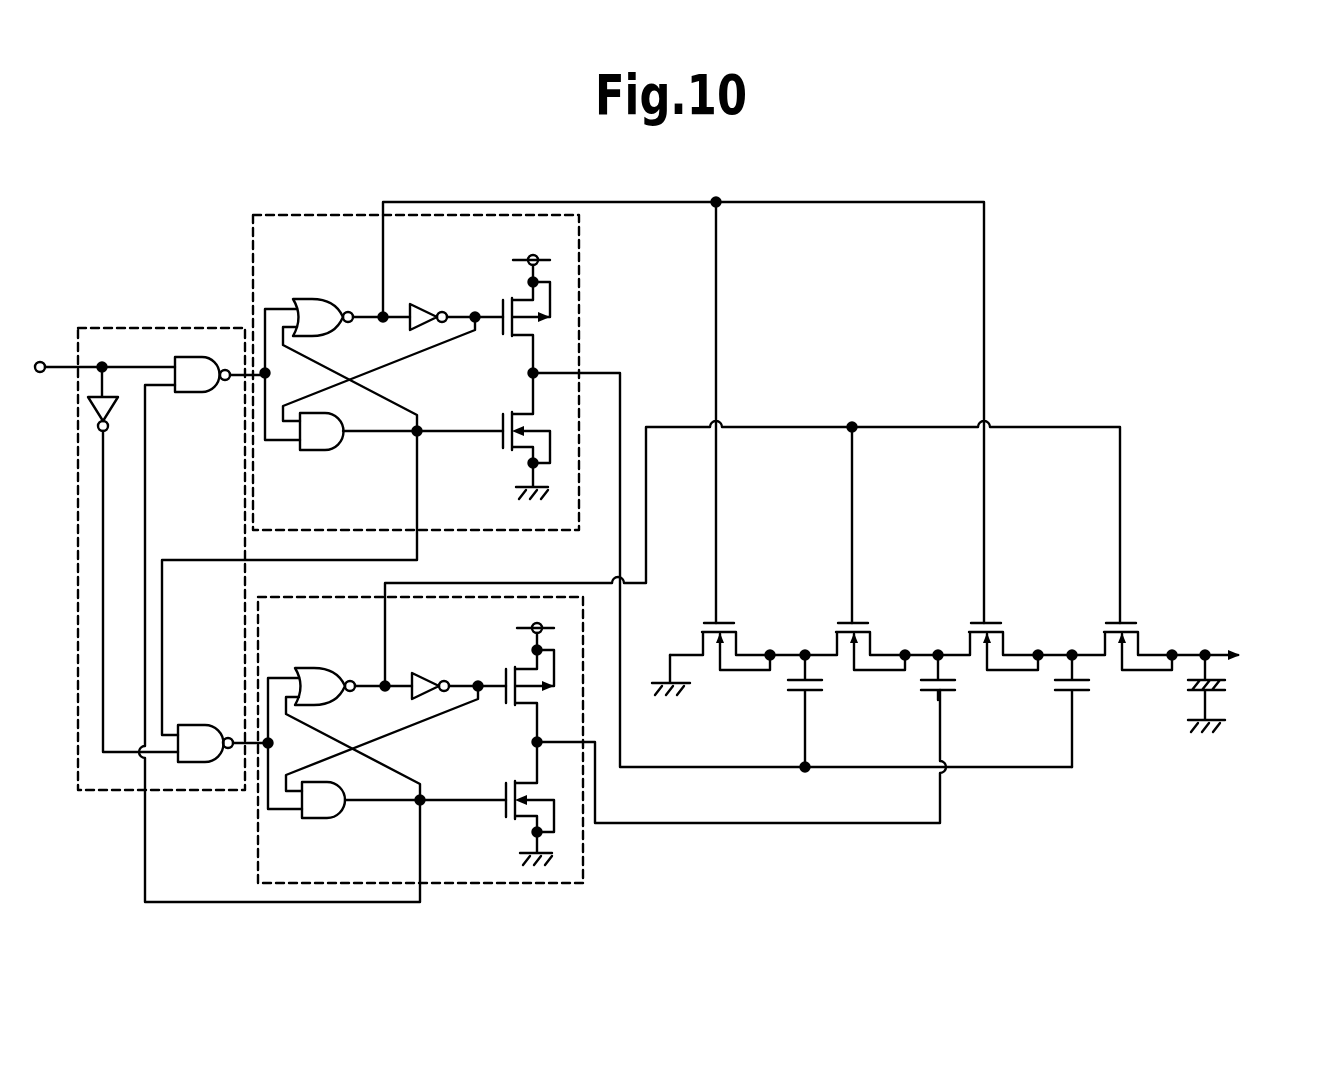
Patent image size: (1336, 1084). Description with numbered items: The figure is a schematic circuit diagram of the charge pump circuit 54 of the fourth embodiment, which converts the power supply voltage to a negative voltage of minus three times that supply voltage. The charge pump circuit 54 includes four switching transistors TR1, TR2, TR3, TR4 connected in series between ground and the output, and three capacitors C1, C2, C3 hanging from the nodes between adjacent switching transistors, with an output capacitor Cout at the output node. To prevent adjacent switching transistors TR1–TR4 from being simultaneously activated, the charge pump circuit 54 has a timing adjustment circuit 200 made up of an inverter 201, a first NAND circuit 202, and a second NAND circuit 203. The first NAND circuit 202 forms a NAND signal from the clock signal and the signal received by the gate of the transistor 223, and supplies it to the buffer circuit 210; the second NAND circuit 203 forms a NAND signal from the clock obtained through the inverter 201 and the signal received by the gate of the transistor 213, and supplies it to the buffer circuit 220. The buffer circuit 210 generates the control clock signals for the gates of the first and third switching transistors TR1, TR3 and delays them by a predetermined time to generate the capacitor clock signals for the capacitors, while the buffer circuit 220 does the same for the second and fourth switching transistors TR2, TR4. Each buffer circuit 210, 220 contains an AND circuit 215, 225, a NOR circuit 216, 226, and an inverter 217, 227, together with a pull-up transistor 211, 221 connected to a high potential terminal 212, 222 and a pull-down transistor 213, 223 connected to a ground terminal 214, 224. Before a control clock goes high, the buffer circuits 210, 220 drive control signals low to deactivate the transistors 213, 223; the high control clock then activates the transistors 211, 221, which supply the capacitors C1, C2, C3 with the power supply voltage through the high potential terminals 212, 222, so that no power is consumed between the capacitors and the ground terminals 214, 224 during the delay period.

The charge pump circuit 54 is at (1078, 227).
The timing adjustment circuit 200 is at (214, 298).
The inverter 201 is at (126, 361).
The first NAND circuit 202 is at (196, 395).
The second NAND circuit 203 is at (192, 725).
The buffer circuit 210 is at (582, 300).
The transistor 211 is at (504, 308).
The high potential terminal 212 is at (516, 260).
The transistor 213 is at (504, 440).
The ground terminal 214 is at (549, 490).
The AND circuit 215 is at (305, 452).
The NOR circuit 216 is at (325, 300).
The inverter 217 is at (420, 305).
The buffer circuit 220 is at (483, 884).
The transistor 221 is at (506, 677).
The high potential terminal 222 is at (520, 628).
The transistor 223 is at (507, 806).
The ground terminal 224 is at (553, 855).
The AND circuit 225 is at (322, 819).
The NOR circuit 226 is at (327, 669).
The inverter 227 is at (422, 673).
The switching transistor TR1 is at (712, 621).
The switching transistor TR2 is at (846, 621).
The switching transistor TR3 is at (980, 621).
The switching transistor TR4 is at (1116, 621).
The capacitor C1 is at (823, 690).
The capacitor C2 is at (956, 690).
The capacitor C3 is at (1090, 690).
The output capacitor Cout is at (1226, 683).